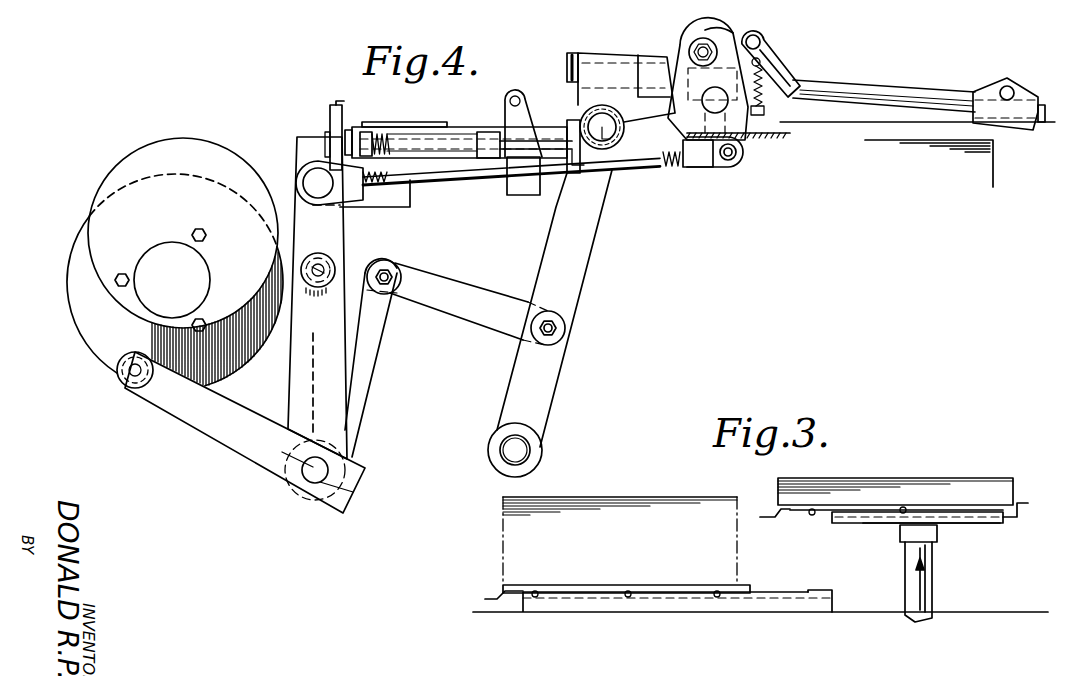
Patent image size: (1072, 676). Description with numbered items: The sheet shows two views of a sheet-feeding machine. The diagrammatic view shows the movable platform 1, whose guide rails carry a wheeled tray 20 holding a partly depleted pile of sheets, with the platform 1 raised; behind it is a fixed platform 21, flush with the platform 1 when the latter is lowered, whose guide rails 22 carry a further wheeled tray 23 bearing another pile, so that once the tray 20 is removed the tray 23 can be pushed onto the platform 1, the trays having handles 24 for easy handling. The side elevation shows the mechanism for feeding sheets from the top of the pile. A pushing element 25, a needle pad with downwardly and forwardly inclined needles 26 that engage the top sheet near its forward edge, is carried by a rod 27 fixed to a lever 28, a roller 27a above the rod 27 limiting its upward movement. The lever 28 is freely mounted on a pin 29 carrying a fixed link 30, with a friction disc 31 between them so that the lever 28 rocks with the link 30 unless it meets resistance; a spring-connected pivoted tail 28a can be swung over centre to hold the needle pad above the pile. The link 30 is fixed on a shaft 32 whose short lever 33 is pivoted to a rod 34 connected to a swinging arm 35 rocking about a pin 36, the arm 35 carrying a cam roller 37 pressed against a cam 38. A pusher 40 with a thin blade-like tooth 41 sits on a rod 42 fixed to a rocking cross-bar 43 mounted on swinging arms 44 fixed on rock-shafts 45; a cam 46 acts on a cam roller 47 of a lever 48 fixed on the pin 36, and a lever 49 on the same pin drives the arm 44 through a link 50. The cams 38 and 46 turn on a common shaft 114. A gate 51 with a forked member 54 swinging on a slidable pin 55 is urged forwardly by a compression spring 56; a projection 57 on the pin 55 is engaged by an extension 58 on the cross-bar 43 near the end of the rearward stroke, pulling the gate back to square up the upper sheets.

In FIG. 3, the platform 1 is at (951, 517).
In FIG. 3, the tray 20 is at (1004, 510).
In FIG. 3, the fixed platform 21 is at (766, 594).
In FIG. 3, the guide rails 22 is at (809, 592).
In FIG. 3, the wheeled tray 23 is at (588, 591).
In FIG. 3, the handles 24 is at (762, 514).
In FIG. 4, the pushing element 25 is at (410, 124).
In FIG. 4, the needles 26 is at (388, 160).
In FIG. 4, the rod 27 is at (547, 127).
In FIG. 4, the roller 27a is at (516, 94).
In FIG. 4, the lever 28 is at (676, 112).
In FIG. 4, the pivoted tail 28a is at (781, 65).
In FIG. 4, the pin 29 is at (690, 49).
In FIG. 4, the link 30 is at (742, 37).
In FIG. 4, the friction disc 31 is at (708, 38).
In FIG. 4, the shaft 32 is at (722, 104).
In FIG. 4, the short lever 33 is at (712, 150).
In FIG. 4, the rod 34 is at (631, 164).
In FIG. 4, the swinging arm 35 is at (326, 227).
In FIG. 4, the pin 36 is at (311, 477).
In FIG. 4, the cam roller 37 is at (328, 261).
In FIG. 4, the cam 38 is at (256, 346).
In FIG. 4, the pusher 40 is at (1015, 90).
In FIG. 4, the tooth 41 is at (994, 141).
In FIG. 4, the rod 42 is at (875, 92).
In FIG. 4, the rocking cross-bar 43 is at (604, 64).
In FIG. 4, the swinging arms 44 is at (588, 250).
In FIG. 4, the rock-shafts 45 is at (505, 449).
In FIG. 4, the cam 46 is at (197, 157).
In FIG. 4, the cam roller 47 is at (123, 384).
In FIG. 4, the lever 48 is at (207, 424).
In FIG. 4, the lever 49 is at (365, 363).
In FIG. 4, the link 50 is at (462, 292).
In FIG. 4, the gate 51 is at (339, 104).
In FIG. 4, the forked member 54 is at (332, 112).
In FIG. 4, the pin 55 is at (512, 128).
In FIG. 4, the compression spring 56 is at (378, 131).
In FIG. 4, the projection 57 is at (584, 168).
In FIG. 4, the extension 58 is at (537, 176).
In FIG. 4, the shaft 114 is at (205, 279).